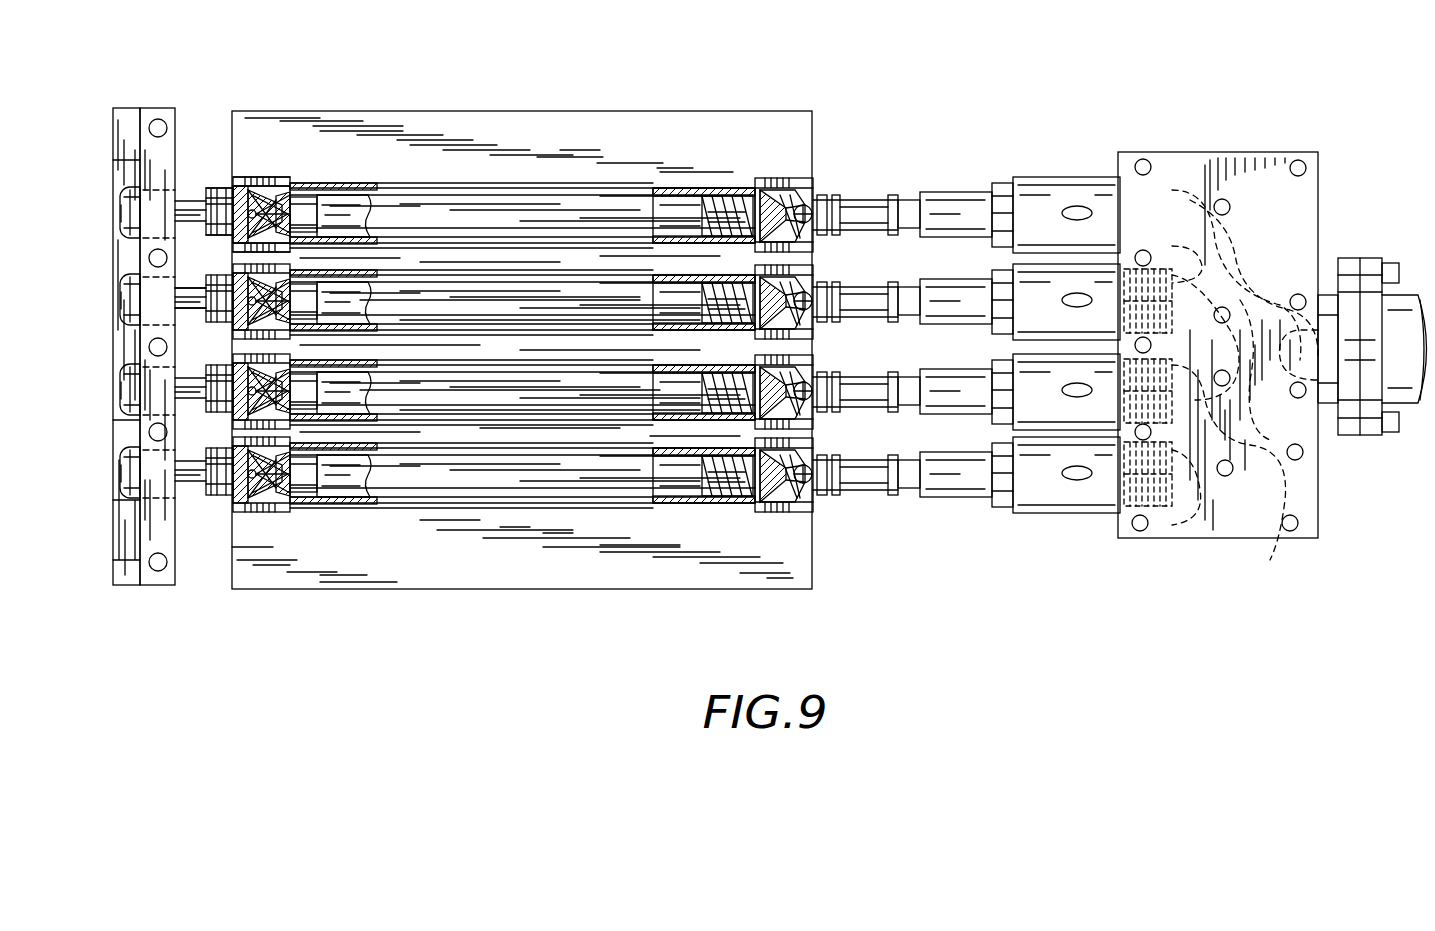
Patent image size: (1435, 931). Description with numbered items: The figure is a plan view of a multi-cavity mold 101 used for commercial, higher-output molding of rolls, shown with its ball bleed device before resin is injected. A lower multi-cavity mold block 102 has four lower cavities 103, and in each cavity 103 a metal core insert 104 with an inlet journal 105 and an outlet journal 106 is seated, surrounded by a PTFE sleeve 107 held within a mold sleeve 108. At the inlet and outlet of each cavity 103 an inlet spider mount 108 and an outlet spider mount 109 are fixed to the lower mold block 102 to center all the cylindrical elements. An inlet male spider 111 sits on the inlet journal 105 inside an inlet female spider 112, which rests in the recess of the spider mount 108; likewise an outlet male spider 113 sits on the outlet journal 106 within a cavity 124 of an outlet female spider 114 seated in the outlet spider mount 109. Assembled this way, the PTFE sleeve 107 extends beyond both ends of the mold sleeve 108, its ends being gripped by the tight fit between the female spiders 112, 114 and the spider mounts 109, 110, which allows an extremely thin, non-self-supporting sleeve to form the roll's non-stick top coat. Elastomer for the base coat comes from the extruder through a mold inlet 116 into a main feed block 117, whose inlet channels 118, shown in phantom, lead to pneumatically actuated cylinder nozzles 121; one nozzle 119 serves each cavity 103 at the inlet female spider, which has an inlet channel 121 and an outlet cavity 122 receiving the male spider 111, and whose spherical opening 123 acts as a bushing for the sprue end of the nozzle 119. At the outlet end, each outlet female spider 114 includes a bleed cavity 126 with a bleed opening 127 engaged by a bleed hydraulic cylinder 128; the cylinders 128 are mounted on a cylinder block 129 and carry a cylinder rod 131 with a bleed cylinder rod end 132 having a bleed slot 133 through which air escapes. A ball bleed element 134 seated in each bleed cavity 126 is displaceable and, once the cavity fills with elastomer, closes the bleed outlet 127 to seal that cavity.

The multi-cavity mold 101 is at (597, 62).
The lower multi-cavity mold block 102 is at (662, 128).
The lower cavity 103 is at (535, 490).
The metal core insert 104 is at (350, 210).
The inlet journal 105 is at (738, 185).
The outlet journal 106 is at (300, 205).
The PTFE sleeve 107 is at (315, 182).
The mold sleeve 108 is at (380, 182).
The outlet spider mount 109 is at (241, 178).
The spider mount 110 is at (247, 500).
The inlet male spider 111 is at (788, 180).
The inlet female spider 112 is at (842, 203).
The outlet male spider 113 is at (266, 178).
The outlet female spider 114 is at (235, 178).
The mold inlet 116 is at (1410, 300).
The main feed block 117 is at (1162, 165).
The inlet channel 118 is at (1205, 190).
The nozzle 119 is at (940, 305).
The inlet channel 121 is at (820, 238).
The outlet cavity 122 is at (805, 190).
The spherical opening 123 is at (845, 207).
The cavity 124 is at (305, 200).
The bleed cavity 126 is at (228, 340).
The bleed opening 127 is at (229, 248).
The bleed hydraulic cylinder 128 is at (133, 555).
The cylinder block 129 is at (160, 540).
The cylinder rod 131 is at (130, 205).
The bleed cylinder rod end 132 is at (220, 188).
The bleed slot 133 is at (190, 205).
The ball bleed element 134 is at (263, 178).